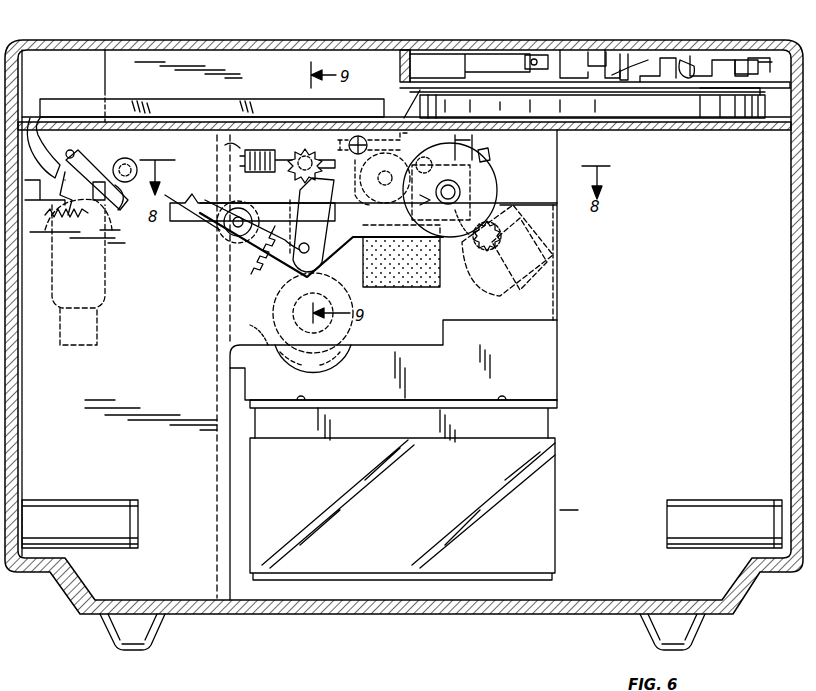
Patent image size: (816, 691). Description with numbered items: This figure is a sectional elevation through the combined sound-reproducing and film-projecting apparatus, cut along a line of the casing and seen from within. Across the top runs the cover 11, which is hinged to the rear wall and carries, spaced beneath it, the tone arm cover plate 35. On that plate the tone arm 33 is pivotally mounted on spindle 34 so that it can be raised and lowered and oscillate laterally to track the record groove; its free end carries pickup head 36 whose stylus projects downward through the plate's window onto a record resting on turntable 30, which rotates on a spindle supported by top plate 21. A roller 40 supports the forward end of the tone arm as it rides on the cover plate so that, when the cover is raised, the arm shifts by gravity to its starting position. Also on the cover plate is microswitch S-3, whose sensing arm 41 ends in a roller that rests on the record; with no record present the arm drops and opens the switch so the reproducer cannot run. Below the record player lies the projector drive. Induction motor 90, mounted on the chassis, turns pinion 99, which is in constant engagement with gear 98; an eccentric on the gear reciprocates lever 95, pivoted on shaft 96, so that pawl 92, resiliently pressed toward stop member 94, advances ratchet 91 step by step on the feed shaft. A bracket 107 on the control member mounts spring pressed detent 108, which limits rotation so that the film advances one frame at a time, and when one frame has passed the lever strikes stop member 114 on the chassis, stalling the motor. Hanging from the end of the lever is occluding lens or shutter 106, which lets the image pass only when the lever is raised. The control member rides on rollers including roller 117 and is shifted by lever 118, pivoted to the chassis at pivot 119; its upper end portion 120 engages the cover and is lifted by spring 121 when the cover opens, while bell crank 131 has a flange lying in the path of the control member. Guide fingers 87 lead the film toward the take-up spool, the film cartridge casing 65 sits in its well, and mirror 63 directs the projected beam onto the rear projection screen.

The cover 11 is at (236, 40).
The top plate 21 is at (720, 130).
The turntable 30 is at (672, 108).
The tone arm 33 is at (644, 49).
The spindle 34 is at (524, 63).
The tone arm cover plate 35 is at (468, 50).
The pickup head 36 is at (755, 58).
The roller 40 is at (685, 60).
The sensing arm 41 is at (640, 55).
The microswitch S-3 is at (595, 50).
The mirror 63 is at (414, 365).
The casing 65 is at (363, 209).
The guide fingers 87 is at (288, 362).
The induction motor 90 is at (556, 270).
The ratchet 91 is at (300, 180).
The pawl 92 is at (358, 193).
The stop member 94 is at (283, 272).
The lever 95 is at (240, 255).
The shaft 96 is at (224, 232).
The gear 98 is at (490, 188).
The pinion 99 is at (496, 222).
The occluding lens or shutter 106 is at (440, 290).
The bracket 107 is at (240, 165).
The spring pressed detent 108 is at (245, 152).
The stop member 114 is at (358, 136).
The roller 117 is at (134, 222).
The lever 118 is at (135, 158).
The pivot 119 is at (74, 152).
The upper end portion 120 is at (35, 125).
The spring 121 is at (82, 240).
The bell crank 131 is at (492, 155).